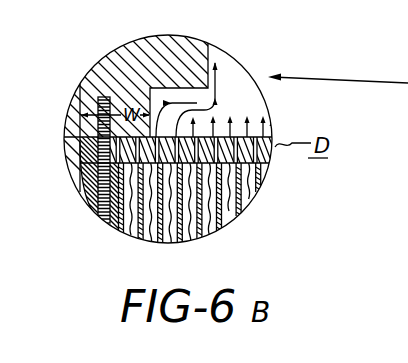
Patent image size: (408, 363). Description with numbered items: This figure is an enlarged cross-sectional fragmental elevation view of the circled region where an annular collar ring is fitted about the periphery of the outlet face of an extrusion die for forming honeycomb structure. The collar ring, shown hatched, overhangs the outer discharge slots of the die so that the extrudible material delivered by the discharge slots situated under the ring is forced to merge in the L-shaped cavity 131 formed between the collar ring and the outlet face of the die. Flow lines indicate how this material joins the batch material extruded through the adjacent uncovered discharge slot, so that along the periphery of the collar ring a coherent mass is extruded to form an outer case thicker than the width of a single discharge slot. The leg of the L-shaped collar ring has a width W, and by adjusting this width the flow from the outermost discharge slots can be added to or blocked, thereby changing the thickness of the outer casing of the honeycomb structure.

The L-shaped cavity 131 is at (123, 52).